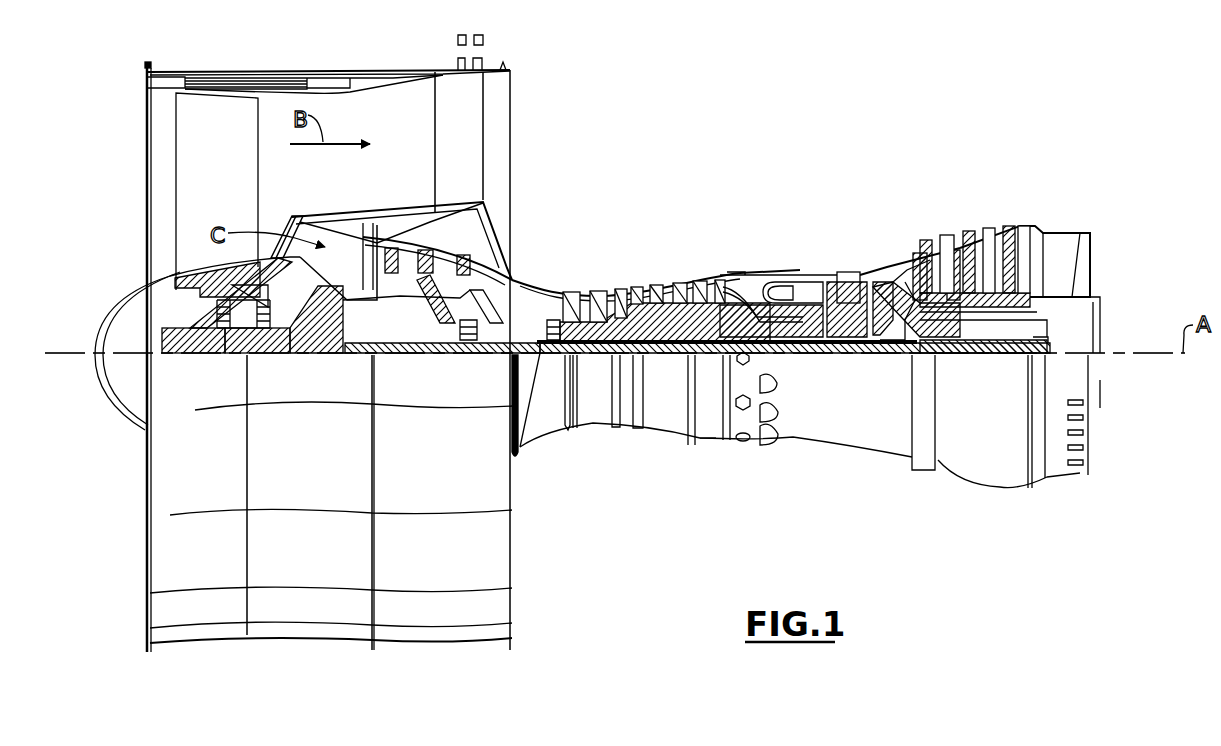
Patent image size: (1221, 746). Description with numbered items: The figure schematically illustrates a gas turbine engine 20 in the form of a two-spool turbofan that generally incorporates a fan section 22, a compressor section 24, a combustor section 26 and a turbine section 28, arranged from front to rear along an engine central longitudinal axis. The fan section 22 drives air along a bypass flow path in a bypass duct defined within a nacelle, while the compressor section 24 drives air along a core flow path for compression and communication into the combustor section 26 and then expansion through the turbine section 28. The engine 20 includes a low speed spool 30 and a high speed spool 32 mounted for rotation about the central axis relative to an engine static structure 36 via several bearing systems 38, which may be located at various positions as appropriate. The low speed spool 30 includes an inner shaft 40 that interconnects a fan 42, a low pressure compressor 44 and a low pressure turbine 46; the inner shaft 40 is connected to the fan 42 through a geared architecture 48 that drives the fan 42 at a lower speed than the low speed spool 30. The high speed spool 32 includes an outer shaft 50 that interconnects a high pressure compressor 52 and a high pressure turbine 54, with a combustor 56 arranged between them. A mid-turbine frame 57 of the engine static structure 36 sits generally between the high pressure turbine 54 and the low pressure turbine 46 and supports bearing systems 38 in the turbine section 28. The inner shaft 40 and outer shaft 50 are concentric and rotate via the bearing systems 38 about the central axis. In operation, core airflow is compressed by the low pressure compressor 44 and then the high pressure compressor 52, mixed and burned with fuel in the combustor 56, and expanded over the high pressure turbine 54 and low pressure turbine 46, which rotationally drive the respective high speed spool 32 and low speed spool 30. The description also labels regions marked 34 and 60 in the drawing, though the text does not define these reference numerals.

The gas turbine engine 20 is at (795, 113).
The fan section 22 is at (355, 43).
The compressor section 24 is at (368, 186).
The combustor section 26 is at (820, 186).
The turbine section 28 is at (1042, 186).
The low speed spool 30 is at (667, 362).
The high speed spool 32 is at (707, 322).
The engine static structure 34 is at (993, 323).
The engine static structure 36 is at (708, 448).
The bearing systems 38 is at (223, 357).
The inner shaft 40 is at (528, 355).
The fan 42 is at (231, 198).
The low pressure compressor 44 is at (445, 256).
The low pressure turbine 46 is at (973, 250).
The geared architecture 48 is at (334, 337).
The outer shaft 50 is at (783, 338).
The high pressure compressor 52 is at (640, 322).
The high pressure turbine 54 is at (847, 280).
The combustor 56 is at (783, 295).
The mid-turbine frame 57 is at (891, 260).
The airfoils 60 is at (925, 337).